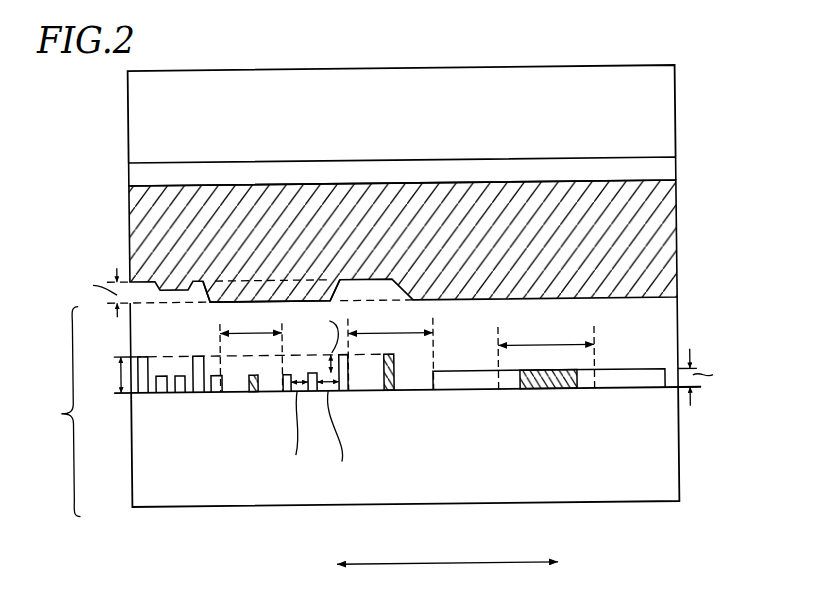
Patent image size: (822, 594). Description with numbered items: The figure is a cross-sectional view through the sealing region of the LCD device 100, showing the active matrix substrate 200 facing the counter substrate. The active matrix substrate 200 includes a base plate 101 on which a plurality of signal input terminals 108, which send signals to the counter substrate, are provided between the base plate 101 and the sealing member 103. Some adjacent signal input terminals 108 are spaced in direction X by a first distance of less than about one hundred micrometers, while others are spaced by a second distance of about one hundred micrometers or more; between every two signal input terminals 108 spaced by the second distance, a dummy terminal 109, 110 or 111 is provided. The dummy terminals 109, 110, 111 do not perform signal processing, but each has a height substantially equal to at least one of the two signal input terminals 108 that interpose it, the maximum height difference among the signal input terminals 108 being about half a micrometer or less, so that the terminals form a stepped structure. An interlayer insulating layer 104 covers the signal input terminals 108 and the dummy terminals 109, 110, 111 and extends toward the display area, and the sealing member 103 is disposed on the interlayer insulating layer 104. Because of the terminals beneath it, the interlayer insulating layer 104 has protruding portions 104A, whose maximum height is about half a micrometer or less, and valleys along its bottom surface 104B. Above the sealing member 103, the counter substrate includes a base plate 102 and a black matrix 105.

The liquid crystal device 100 is at (709, 66).
The base plate 101 is at (151, 459).
The base plate 102 is at (473, 95).
The sealing member 103 is at (374, 160).
The interlayer insulating layer 104 is at (154, 328).
The protruding portions 104A is at (373, 289).
The bottom surface 104B is at (593, 431).
The black matrix 105 is at (146, 176).
The signal input terminals 108 is at (177, 390).
The dummy terminal 109 is at (251, 390).
The dummy terminal 110 is at (386, 390).
The dummy terminal 111 is at (551, 390).
The active matrix substrate 200 is at (385, 445).